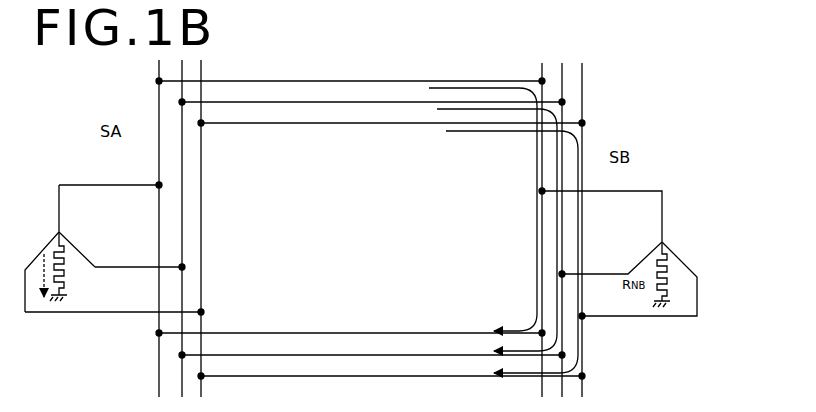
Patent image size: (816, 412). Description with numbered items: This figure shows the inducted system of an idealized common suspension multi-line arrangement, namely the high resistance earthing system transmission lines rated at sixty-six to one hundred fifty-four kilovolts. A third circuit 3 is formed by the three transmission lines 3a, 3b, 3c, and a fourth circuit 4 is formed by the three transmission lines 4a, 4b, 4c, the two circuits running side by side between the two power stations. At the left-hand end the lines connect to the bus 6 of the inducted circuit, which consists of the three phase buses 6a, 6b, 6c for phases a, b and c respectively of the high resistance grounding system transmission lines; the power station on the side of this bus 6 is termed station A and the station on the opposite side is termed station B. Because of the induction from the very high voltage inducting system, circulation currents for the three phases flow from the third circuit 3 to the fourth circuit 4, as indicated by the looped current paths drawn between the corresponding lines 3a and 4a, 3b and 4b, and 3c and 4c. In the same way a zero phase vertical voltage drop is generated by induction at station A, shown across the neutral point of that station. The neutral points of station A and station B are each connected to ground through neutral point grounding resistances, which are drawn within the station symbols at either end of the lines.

The third circuit 3 is at (367, 73).
The high resistance earthing system transmission line 3a is at (381, 82).
The high resistance earthing system transmission line 3b is at (381, 103).
The high resistance earthing system transmission line 3c is at (381, 124).
The fourth circuit 4 is at (423, 304).
The high resistance earthing system transmission line 4a is at (397, 334).
The high resistance earthing system transmission line 4b is at (397, 356).
The high resistance earthing system transmission line 4c is at (397, 377).
The bus 6 is at (87, 223).
The bus 6a is at (110, 176).
The bus 6b is at (140, 259).
The bus 6c is at (114, 303).